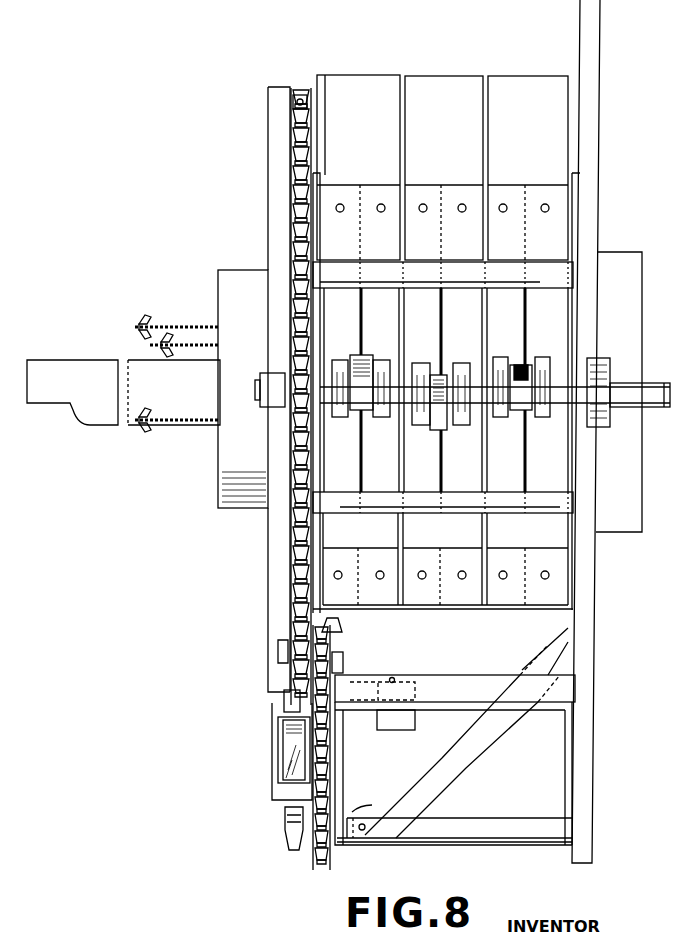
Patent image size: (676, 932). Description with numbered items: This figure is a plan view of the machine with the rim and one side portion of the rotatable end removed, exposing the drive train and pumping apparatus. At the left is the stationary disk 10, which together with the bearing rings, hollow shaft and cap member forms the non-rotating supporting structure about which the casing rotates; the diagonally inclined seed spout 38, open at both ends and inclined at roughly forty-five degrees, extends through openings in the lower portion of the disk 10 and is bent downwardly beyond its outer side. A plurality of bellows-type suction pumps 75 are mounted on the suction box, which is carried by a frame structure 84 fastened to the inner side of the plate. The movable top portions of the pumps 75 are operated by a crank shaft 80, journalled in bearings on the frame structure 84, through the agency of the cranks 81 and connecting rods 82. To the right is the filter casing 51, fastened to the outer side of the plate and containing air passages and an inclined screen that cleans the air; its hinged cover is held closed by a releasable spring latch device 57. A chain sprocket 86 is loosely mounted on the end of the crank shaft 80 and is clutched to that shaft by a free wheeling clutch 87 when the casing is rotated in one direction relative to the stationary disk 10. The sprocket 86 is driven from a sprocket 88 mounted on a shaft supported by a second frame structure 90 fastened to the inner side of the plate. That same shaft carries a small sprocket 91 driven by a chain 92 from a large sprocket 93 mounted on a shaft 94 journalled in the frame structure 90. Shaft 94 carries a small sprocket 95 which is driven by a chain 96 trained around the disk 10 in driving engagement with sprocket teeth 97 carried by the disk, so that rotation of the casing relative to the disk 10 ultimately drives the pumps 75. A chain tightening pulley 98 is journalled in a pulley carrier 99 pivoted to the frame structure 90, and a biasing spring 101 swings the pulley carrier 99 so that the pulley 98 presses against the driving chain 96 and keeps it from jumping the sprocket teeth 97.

The disk 10 is at (268, 140).
The seed spout 38 is at (123, 373).
The filter casing 51 is at (606, 522).
The releasable spring latch device 57 is at (622, 402).
The bellows-type suction pumps 75 is at (443, 342).
The crank shaft 80 is at (470, 378).
The cranks 81 is at (418, 360).
The connecting rods 82 is at (442, 410).
The frame structure 84 is at (322, 305).
The chain sprocket 86 is at (287, 363).
The free wheeling clutch 87 is at (268, 375).
The sprocket 88 is at (284, 700).
The frame structure 90 is at (460, 675).
The small sprocket 91 is at (342, 626).
The chain 92 is at (343, 658).
The large sprocket 93 is at (332, 858).
The shaft 94 is at (352, 810).
The small sprocket 95 is at (293, 845).
The chain 96 is at (300, 197).
The sprocket teeth 97 is at (290, 113).
The chain tightening pulley 98 is at (292, 735).
The pulley carrier 99 is at (277, 748).
The biasing spring 101 is at (280, 778).